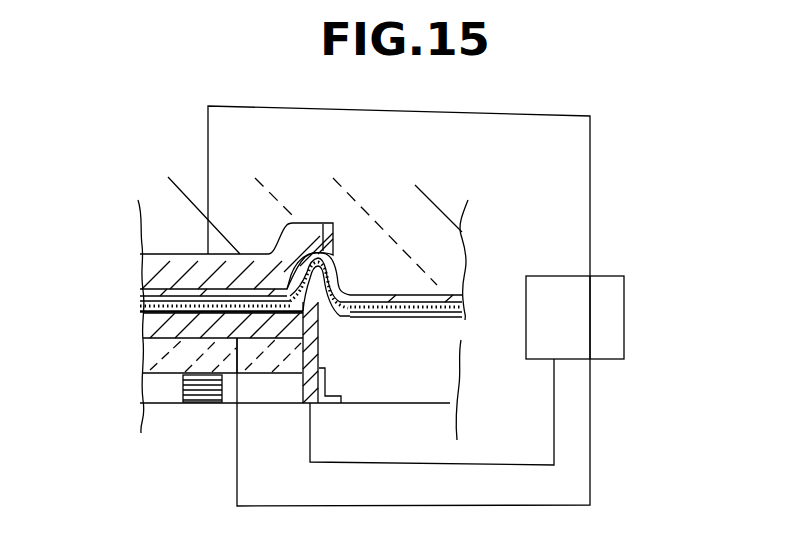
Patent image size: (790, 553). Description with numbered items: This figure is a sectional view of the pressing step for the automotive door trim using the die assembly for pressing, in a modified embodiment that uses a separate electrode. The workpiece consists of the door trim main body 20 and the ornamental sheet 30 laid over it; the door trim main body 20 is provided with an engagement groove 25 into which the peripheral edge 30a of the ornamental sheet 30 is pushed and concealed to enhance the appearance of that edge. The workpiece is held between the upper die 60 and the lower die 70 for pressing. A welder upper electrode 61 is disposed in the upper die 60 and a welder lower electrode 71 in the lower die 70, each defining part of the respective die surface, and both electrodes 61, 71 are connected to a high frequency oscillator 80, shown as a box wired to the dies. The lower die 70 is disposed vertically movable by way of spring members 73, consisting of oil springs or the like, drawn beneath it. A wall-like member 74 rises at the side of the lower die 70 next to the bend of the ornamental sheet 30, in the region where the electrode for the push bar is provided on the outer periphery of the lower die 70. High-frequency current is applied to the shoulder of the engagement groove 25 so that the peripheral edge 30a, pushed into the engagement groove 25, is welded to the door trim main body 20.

The door trim main body 20 is at (424, 294).
The engagement groove 25 is at (328, 224).
The ornamental sheet 30 is at (174, 290).
The peripheral edge 30a is at (320, 315).
The upper die 60 is at (410, 221).
The welder upper electrode 61 is at (243, 254).
The lower die 70 is at (148, 362).
The welder lower electrode 71 is at (163, 318).
The spring members 73 is at (198, 401).
The wall 74 is at (315, 334).
The high frequency oscillator 80 is at (607, 276).